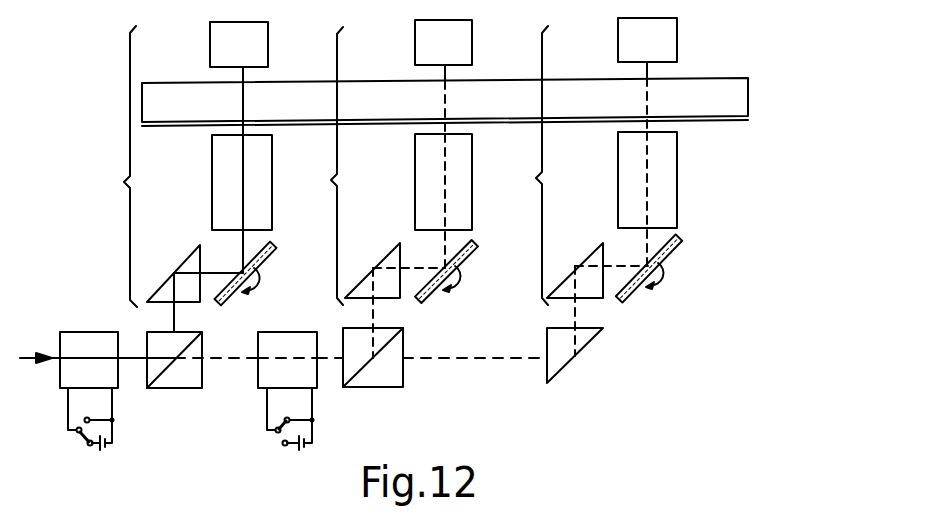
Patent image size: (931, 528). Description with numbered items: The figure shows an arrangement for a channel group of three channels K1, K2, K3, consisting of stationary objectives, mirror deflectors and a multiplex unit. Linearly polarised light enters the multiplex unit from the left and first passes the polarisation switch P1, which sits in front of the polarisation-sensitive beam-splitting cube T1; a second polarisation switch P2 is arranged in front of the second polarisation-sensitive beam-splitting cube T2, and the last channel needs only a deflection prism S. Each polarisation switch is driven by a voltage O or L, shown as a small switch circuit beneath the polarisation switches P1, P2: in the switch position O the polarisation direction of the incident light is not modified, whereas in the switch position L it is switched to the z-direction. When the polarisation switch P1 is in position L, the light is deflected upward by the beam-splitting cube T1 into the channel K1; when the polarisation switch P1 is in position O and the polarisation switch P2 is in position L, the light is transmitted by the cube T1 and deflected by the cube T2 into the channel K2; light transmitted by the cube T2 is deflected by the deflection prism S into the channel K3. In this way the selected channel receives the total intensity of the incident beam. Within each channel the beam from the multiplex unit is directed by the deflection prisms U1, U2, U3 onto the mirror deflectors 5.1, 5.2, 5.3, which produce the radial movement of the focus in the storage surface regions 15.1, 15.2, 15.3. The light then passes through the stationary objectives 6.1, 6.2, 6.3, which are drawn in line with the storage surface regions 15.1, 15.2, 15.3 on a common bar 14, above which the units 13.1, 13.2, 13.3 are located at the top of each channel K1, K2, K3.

The light source / detector unit 13.1 is at (268, 40).
The light source / detector unit 13.2 is at (472, 40).
The light source / detector unit 13.3 is at (677, 37).
The common carrier bar 14 is at (445, 89).
The storage surface region 15.1 is at (250, 121).
The storage surface region 15.2 is at (459, 119).
The storage surface region 15.3 is at (659, 116).
The objective 6.1 is at (272, 188).
The objective 6.2 is at (472, 164).
The objective 6.3 is at (677, 161).
The mirror deflector 5.1 is at (272, 249).
The mirror deflector 5.2 is at (474, 247).
The mirror deflector 5.3 is at (678, 241).
The channel K1 is at (119, 166).
The channel K2 is at (325, 166).
The channel K3 is at (530, 165).
The deflection prism U1 is at (159, 293).
The deflection prism U2 is at (360, 288).
The deflection prism U3 is at (562, 288).
The polarisation-sensitive beam-splitting cube T1 is at (157, 332).
The polarisation-sensitive beam-splitting cube T2 is at (355, 328).
The deflection prism S is at (567, 328).
The polarisation switch P1 is at (88, 332).
The polarisation switch P2 is at (278, 332).
The switch position O is at (191, 417).
The switch position L is at (199, 446).